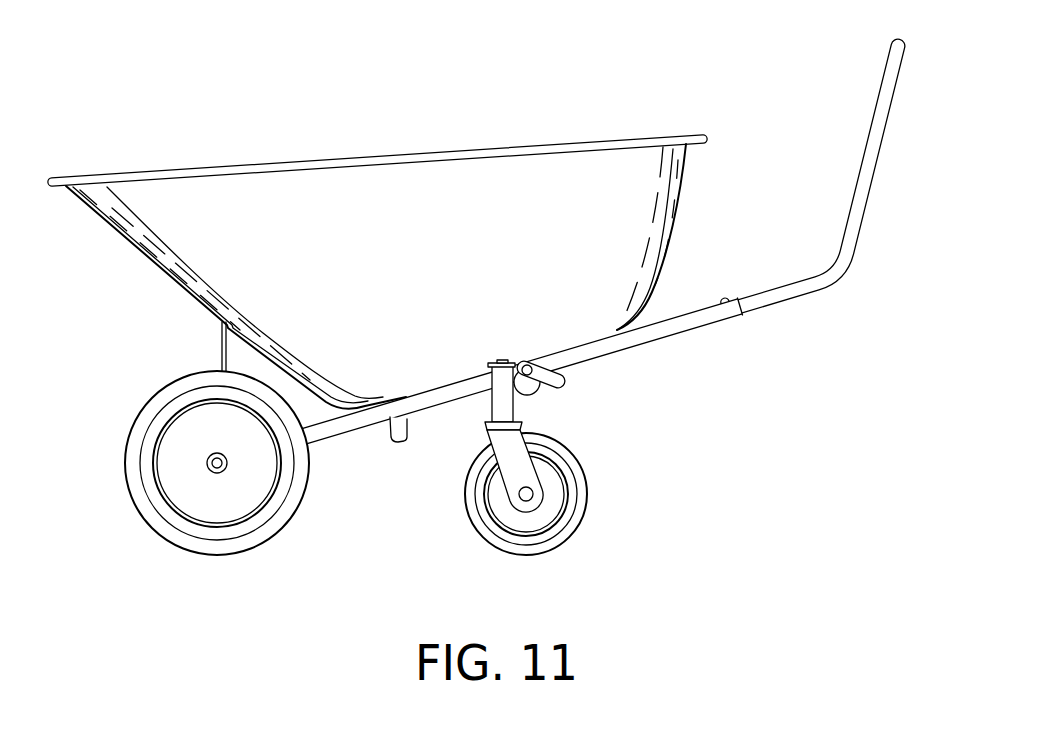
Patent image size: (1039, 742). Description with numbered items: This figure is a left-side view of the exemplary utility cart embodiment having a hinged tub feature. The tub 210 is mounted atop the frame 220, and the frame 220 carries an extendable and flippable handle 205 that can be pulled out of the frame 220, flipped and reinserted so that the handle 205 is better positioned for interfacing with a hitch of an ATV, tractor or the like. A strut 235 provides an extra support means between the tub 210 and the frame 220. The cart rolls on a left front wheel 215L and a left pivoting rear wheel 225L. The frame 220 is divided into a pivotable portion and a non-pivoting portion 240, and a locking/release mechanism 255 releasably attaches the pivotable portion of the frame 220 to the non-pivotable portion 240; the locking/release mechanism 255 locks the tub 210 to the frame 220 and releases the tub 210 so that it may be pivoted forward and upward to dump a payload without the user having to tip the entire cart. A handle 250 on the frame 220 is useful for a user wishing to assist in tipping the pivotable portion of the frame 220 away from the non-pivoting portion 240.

The tub 210 is at (370, 298).
The extendable and flippable handle 205 is at (815, 293).
The frame 220 is at (613, 353).
The struts 235 is at (218, 342).
The non-pivoting portion 240 is at (566, 380).
The handle 250 is at (407, 437).
The locking/release mechanism 255 is at (537, 394).
The front wheel 215L is at (250, 548).
The pivoting rear wheel 225L is at (565, 533).